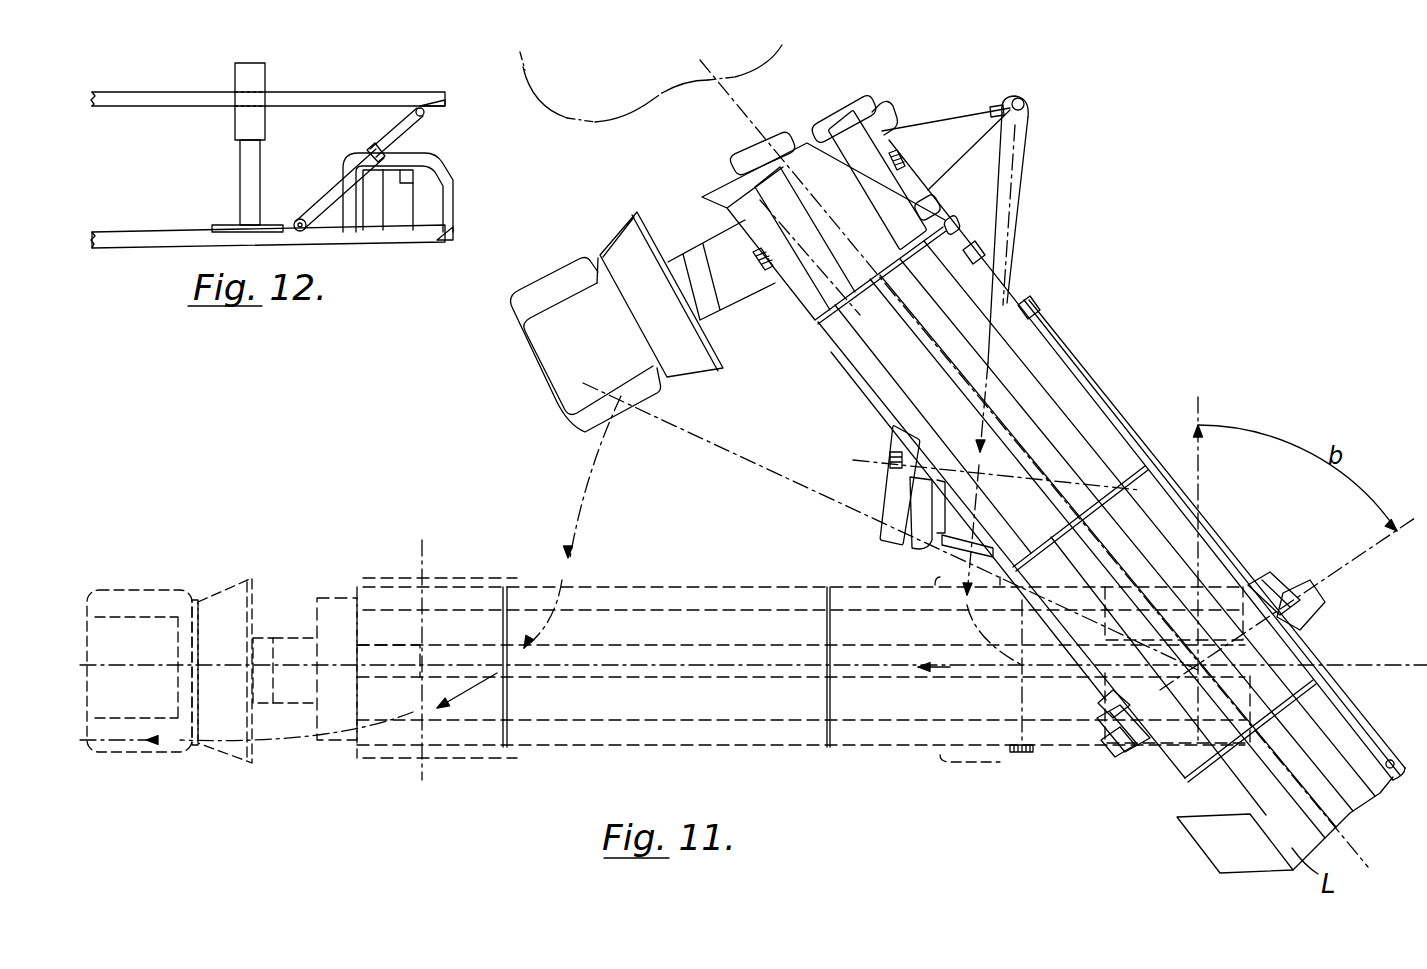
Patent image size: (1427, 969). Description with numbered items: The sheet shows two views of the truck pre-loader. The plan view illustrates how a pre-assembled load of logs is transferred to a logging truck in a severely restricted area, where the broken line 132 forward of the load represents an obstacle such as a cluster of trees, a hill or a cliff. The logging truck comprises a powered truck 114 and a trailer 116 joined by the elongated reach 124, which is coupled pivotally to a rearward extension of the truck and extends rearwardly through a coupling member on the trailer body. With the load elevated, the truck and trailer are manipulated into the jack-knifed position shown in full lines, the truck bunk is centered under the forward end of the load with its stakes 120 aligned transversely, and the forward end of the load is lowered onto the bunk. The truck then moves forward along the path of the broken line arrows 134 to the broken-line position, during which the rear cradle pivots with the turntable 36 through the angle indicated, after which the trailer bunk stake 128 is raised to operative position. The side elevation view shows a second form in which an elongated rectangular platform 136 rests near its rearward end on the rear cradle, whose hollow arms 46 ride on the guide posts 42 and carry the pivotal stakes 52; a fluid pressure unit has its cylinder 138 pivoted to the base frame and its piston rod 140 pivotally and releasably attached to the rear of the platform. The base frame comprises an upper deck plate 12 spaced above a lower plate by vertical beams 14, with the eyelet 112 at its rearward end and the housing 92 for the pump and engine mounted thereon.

In FIG. 11, the upper deck plate 12 is at (1092, 400).
In FIG. 12, the vertical beams 14 is at (136, 238).
In FIG. 11, the turntable plate 36 is at (1097, 704).
In FIG. 12, the guide posts 42 is at (240, 178).
In FIG. 12, the upstanding arms 46 is at (234, 74).
In FIG. 11, the upstanding arms 46 is at (1283, 597).
In FIG. 11, the stakes 52 is at (1308, 605).
In FIG. 12, the housing 92 is at (400, 214).
In FIG. 11, the housing 92 is at (1205, 850).
In FIG. 12, the eyelet 112 is at (447, 241).
In FIG. 11, the powered truck 114 is at (612, 215).
In FIG. 11, the trailer 116 is at (857, 445).
In FIG. 11, the stakes 120 is at (897, 150).
In FIG. 11, the reach 124 is at (1010, 172).
In FIG. 11, the stakes 128 is at (890, 462).
In FIG. 11, the broken line 132 is at (628, 120).
In FIG. 11, the broken line arrows 134 is at (575, 527).
In FIG. 12, the platform 136 is at (350, 97).
In FIG. 12, the cylinder 138 is at (327, 197).
In FIG. 12, the piston rod 140 is at (397, 129).